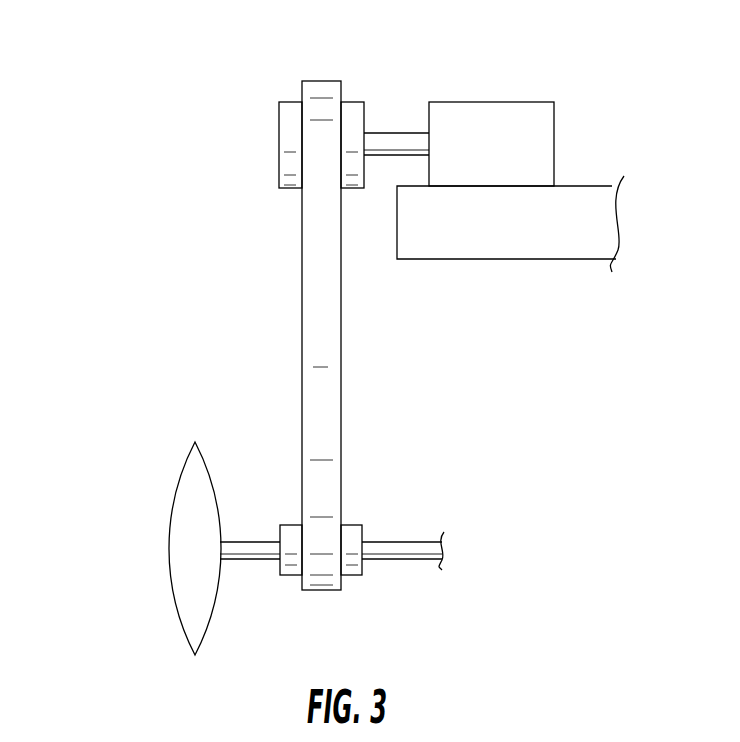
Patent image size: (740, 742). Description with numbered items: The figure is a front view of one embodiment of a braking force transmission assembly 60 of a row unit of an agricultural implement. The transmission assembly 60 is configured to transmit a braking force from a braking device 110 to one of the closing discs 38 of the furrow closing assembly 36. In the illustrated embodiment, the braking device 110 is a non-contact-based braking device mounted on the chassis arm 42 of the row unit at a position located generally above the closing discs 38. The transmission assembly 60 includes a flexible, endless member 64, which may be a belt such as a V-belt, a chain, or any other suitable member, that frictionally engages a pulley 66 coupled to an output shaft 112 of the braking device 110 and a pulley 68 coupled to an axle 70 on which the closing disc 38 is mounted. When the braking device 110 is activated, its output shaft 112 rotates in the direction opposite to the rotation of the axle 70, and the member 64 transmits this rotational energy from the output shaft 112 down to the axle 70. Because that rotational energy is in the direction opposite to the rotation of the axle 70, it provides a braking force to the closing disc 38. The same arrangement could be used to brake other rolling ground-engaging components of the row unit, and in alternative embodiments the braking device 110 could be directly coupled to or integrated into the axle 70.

The furrow closing assembly 36 is at (118, 505).
The closing disc 38 is at (177, 488).
The chassis arm 42 is at (505, 259).
The braking force transmission assembly 60 is at (120, 96).
The flexible, endless member 64 is at (302, 345).
The pulley 66 is at (279, 140).
The pulley 68 is at (350, 525).
The axle 70 is at (403, 542).
The braking device 110 is at (496, 102).
The output shaft 112 is at (389, 134).